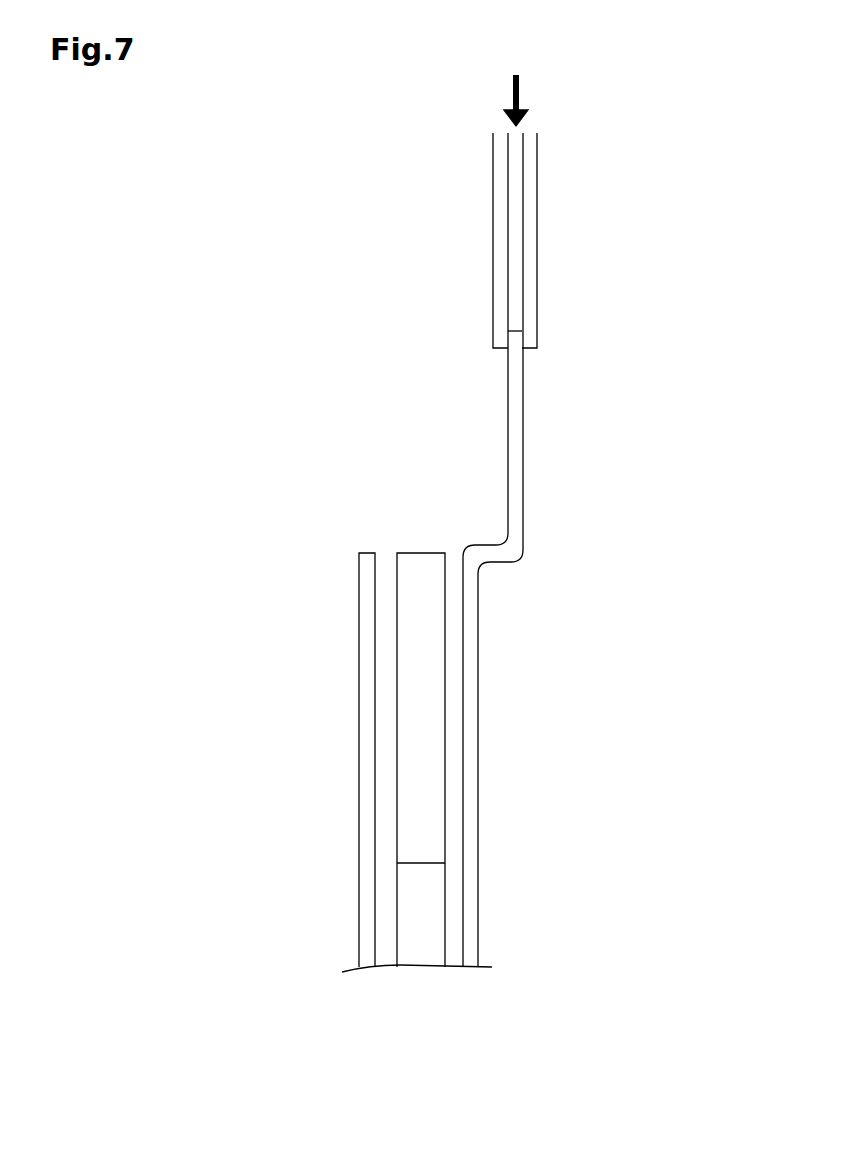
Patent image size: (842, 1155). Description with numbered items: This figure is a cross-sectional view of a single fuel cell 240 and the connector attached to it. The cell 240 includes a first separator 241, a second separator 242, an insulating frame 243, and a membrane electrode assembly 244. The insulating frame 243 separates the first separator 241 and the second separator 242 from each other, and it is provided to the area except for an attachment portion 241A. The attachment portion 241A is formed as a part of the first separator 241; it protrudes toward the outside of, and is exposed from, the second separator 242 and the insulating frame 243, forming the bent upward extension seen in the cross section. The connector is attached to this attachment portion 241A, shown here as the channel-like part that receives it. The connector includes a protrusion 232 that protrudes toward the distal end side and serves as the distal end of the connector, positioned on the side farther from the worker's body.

The protrusion 232 is at (498, 305).
The cell 240 is at (330, 494).
The first separator 241 is at (472, 716).
The attachment portion 241A is at (513, 433).
The second separator 242 is at (366, 716).
The insulating frame 243 is at (425, 560).
The membrane electrode assembly 244 is at (425, 937).